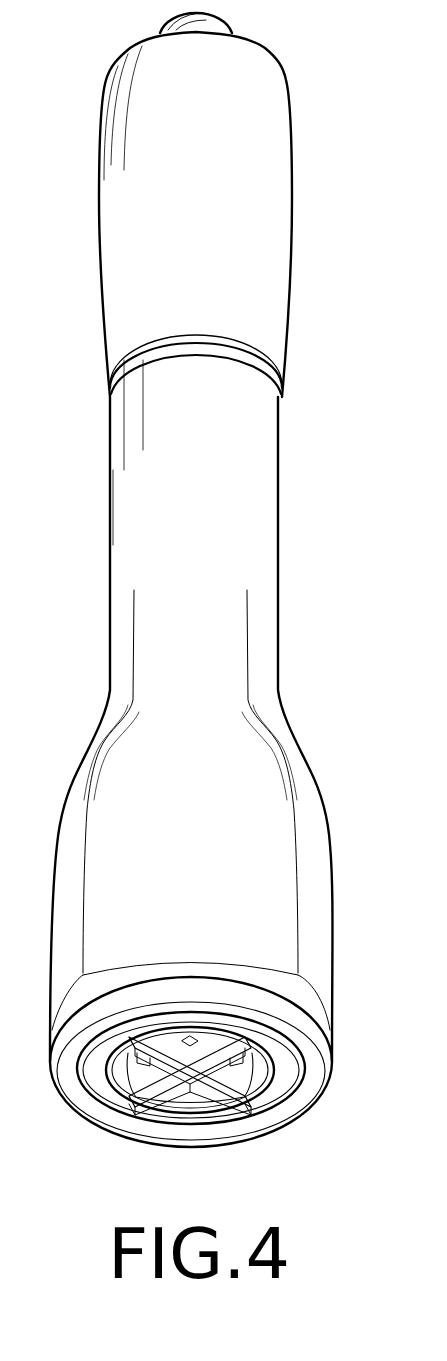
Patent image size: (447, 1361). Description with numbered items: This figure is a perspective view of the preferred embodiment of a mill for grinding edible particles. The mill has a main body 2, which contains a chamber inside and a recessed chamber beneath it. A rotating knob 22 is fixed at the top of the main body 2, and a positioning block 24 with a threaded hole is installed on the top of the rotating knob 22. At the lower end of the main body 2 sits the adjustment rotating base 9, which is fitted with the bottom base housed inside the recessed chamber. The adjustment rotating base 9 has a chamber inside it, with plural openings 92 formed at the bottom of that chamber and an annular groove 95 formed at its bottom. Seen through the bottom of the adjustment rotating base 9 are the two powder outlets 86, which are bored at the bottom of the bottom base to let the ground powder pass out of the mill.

The positioning block 24 is at (214, 27).
The rotating knob 22 is at (260, 272).
The main body 2 is at (243, 524).
The adjustment rotating base 9 is at (283, 1013).
The annular groove 95 is at (283, 1085).
The openings 92 is at (198, 1108).
The powder outlets 86 is at (248, 1063).